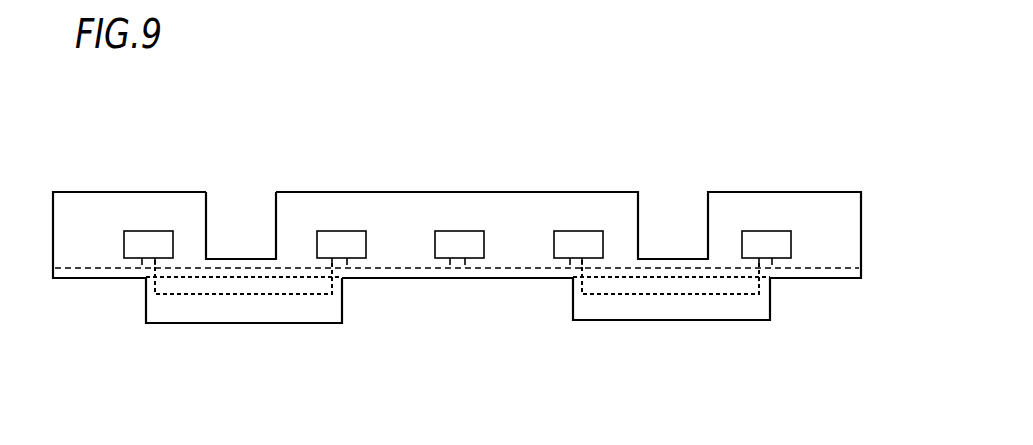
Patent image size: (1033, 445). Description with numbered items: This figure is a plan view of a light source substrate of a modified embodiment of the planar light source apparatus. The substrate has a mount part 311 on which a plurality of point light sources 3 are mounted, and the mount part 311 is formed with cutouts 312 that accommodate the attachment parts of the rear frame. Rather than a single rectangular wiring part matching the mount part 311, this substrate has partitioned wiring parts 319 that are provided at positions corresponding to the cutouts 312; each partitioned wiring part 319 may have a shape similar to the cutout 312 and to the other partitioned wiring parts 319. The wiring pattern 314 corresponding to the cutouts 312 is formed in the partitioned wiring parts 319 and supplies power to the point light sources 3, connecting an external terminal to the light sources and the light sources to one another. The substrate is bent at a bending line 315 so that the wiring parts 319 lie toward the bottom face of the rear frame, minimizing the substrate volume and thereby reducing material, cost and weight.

The point light source 3 is at (455, 248).
The mount part 311 is at (743, 213).
The cutout 312 is at (245, 222).
The wiring pattern 314 is at (222, 294).
The bending line 315 is at (738, 302).
The partitioned wiring part 319 is at (325, 313).